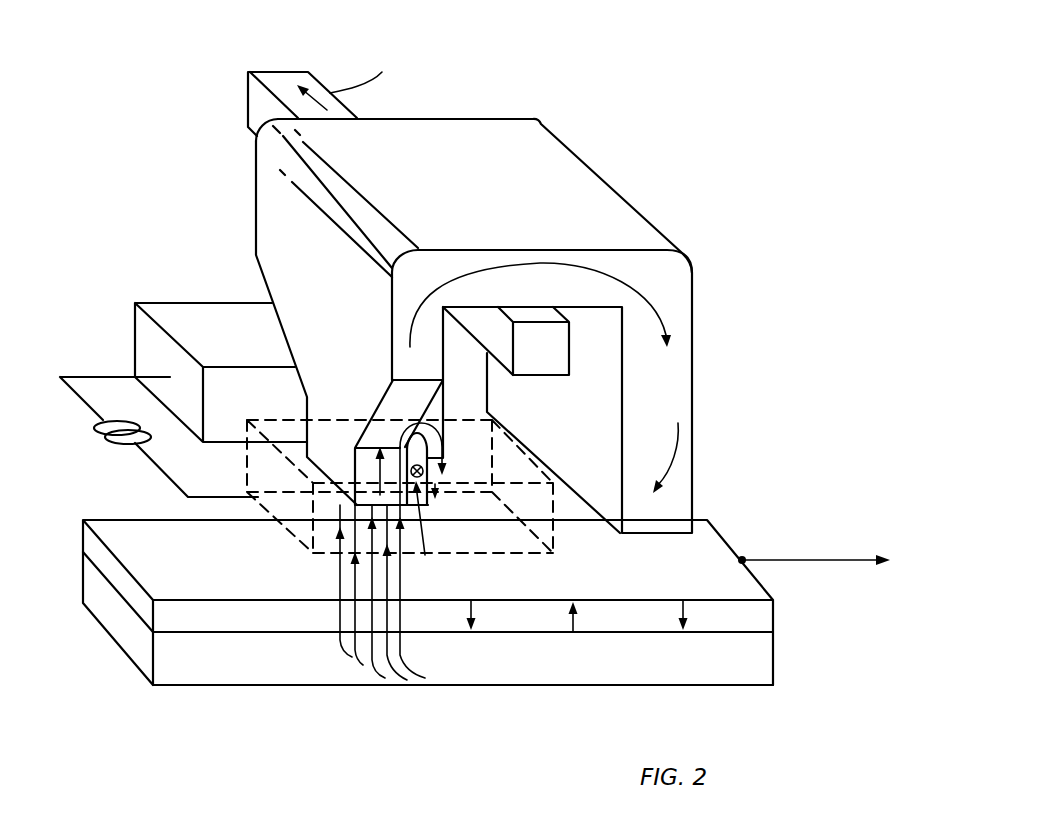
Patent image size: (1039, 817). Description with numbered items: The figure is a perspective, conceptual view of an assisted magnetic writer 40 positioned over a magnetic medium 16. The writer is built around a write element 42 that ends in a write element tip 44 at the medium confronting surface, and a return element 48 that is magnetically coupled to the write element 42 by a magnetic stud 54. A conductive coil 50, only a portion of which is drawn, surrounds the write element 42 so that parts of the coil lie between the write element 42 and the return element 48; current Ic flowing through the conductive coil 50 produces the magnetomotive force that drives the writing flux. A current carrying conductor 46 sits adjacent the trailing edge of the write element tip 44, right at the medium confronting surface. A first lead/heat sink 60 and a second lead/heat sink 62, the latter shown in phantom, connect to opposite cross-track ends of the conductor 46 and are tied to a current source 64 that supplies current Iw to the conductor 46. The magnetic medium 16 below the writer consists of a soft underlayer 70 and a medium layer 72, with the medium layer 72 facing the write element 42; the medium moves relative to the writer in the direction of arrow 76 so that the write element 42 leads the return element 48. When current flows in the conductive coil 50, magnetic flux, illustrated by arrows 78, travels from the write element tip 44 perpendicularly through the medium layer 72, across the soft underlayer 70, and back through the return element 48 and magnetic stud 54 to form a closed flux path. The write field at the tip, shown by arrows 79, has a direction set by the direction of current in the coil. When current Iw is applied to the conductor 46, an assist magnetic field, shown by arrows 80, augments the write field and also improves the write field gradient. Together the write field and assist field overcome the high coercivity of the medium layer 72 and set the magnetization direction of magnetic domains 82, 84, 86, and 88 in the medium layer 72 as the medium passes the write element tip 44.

The magnetic medium 16 is at (809, 655).
The magnetic writer 40 is at (680, 120).
The write element 42 is at (264, 222).
The write element tip 44 is at (322, 442).
The current carrying conductor 46 is at (425, 482).
The return element 48 is at (683, 375).
The conductive coil 50 is at (283, 82).
The magnetic stud 54 is at (487, 143).
The first lead/heat sink 60 is at (300, 538).
The second lead/heat sink 62 is at (192, 320).
The current source 64 is at (92, 377).
The soft underlayer 70 is at (127, 647).
The medium layer 72 is at (87, 543).
The arrow 76 is at (807, 560).
The magnetic flux arrows 78 is at (545, 262).
The write field arrows 79 is at (340, 655).
The assist magnetic field arrows 80 is at (451, 457).
The magnetic domain 82 is at (380, 614).
The magnetic domain 84 is at (473, 628).
The magnetic domain 86 is at (573, 622).
The magnetic domain 88 is at (683, 628).